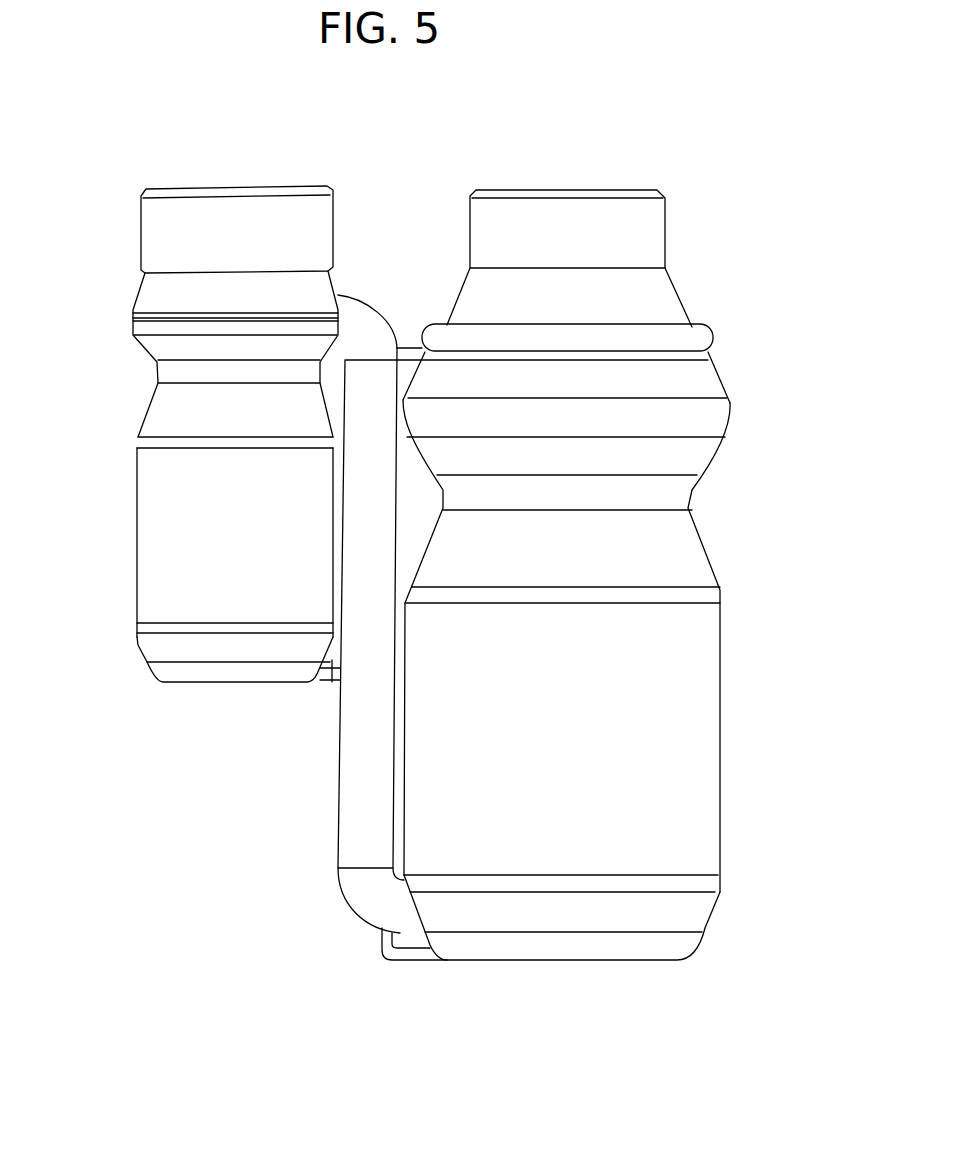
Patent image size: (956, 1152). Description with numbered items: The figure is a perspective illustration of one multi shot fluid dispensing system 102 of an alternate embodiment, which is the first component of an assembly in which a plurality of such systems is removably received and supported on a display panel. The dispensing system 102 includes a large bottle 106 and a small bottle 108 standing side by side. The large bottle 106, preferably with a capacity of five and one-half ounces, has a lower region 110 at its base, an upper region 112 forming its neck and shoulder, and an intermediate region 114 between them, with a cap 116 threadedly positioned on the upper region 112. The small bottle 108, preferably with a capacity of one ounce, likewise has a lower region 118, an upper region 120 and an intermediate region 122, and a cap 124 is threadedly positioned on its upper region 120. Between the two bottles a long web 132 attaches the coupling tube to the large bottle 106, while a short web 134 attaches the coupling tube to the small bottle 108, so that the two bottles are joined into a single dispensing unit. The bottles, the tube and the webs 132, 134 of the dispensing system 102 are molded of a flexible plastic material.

The multi shot fluid dispensing system 102 is at (848, 117).
The large bottle 106 is at (615, 708).
The small bottle 108 is at (288, 552).
The lower region 110 is at (712, 910).
The upper region 112 is at (692, 293).
The intermediate region 114 is at (712, 562).
The cap 116 is at (503, 188).
The lower region 118 is at (137, 657).
The upper region 120 is at (138, 303).
The intermediate region 122 is at (136, 520).
The cap 124 is at (147, 190).
The long web 132 is at (397, 772).
The short web 134 is at (333, 685).